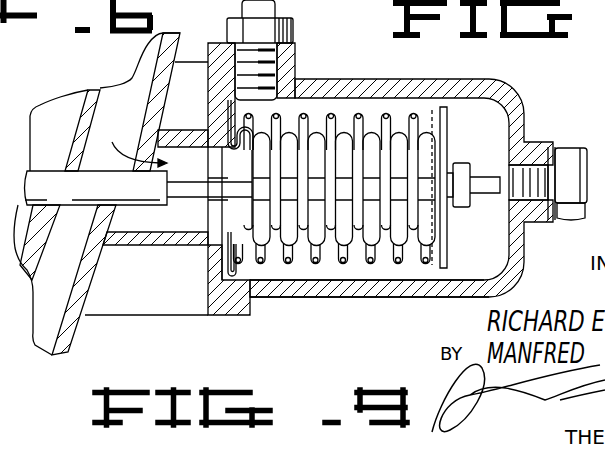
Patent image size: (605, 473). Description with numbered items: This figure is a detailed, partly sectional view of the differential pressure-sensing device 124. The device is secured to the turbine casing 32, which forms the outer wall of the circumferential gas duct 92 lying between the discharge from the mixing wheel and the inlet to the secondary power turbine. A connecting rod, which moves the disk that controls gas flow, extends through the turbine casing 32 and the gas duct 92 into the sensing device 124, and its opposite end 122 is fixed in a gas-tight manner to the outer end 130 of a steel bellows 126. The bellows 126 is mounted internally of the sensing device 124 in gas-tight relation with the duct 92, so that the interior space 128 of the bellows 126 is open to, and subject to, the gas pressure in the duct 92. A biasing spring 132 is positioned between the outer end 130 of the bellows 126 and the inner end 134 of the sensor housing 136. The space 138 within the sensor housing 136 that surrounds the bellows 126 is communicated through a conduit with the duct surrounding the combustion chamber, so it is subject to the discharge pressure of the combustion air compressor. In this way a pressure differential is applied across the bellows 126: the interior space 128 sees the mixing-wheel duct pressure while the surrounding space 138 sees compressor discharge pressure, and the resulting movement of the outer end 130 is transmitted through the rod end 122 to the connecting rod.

The turbine casing 32 is at (73, 336).
The gas duct 92 is at (80, 273).
The opposite end of the connecting rod 122 is at (187, 199).
The pressure differential sensing device 124 is at (519, 93).
The steel bellows 126 is at (353, 262).
The interior space of the bellows 128 is at (370, 165).
The outer end of the steel bellows 130 is at (447, 145).
The biasing spring 132 is at (304, 113).
The inner end of the sensor housing 134 is at (226, 98).
The sensor housing 136 is at (457, 297).
The space within the sensor housing 138 is at (497, 248).